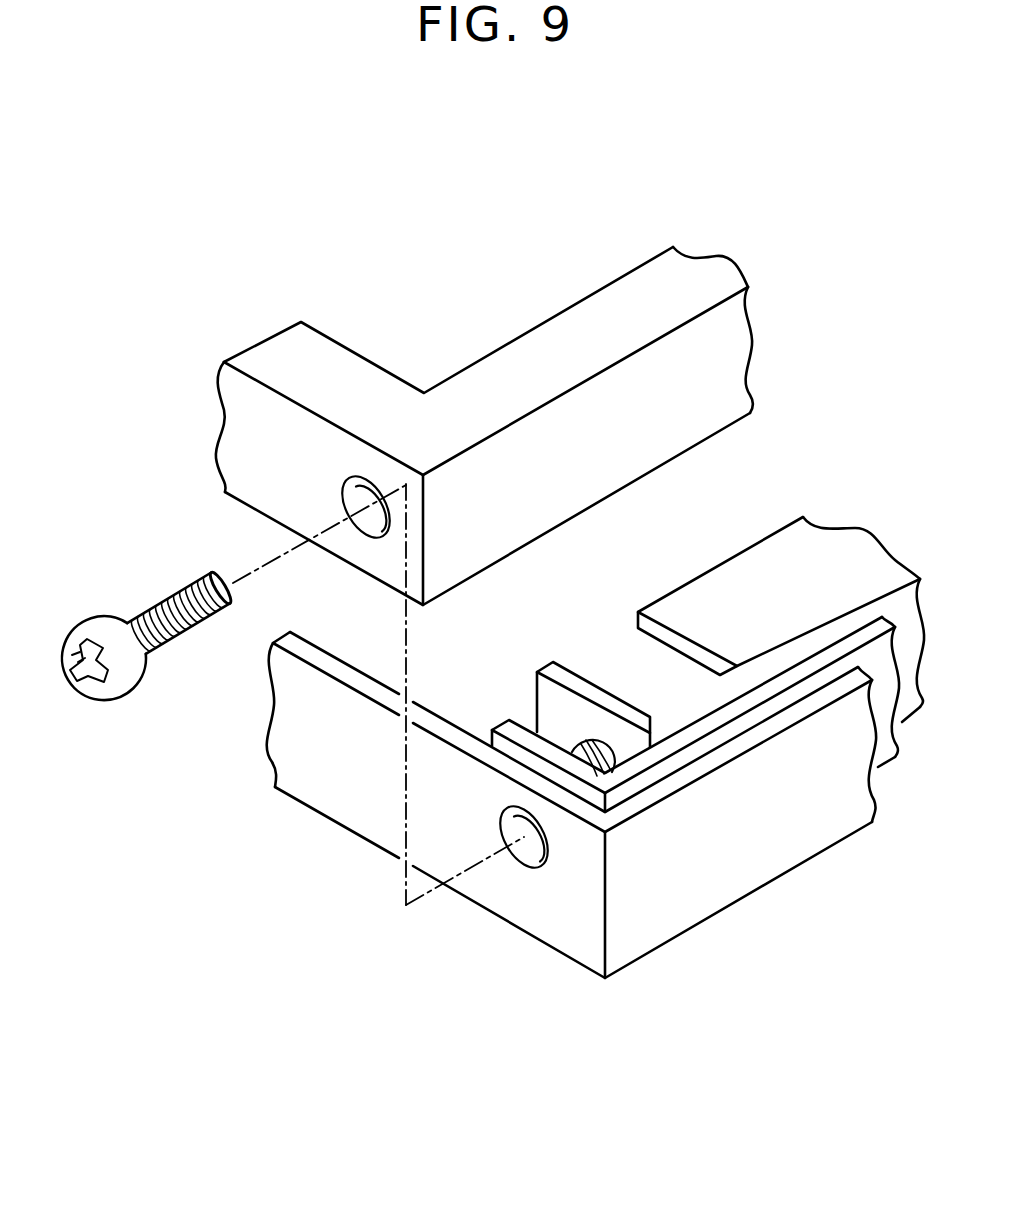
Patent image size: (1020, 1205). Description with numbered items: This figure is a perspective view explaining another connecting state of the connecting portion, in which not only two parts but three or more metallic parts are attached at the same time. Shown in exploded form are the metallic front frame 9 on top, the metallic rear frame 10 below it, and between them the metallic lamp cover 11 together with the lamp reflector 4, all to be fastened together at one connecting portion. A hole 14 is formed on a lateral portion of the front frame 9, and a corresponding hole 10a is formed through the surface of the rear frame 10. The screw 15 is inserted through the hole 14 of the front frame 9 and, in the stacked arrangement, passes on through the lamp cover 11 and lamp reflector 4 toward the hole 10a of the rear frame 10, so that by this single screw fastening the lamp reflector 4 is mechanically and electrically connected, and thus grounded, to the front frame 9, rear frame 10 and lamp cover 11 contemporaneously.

The front frame 9 is at (430, 398).
The lamp reflector 4 is at (827, 563).
The hole 14 is at (348, 497).
The screw 15 is at (125, 683).
The hole 10a is at (527, 857).
The rear frame 10 is at (571, 841).
The lamp cover 11 is at (672, 756).